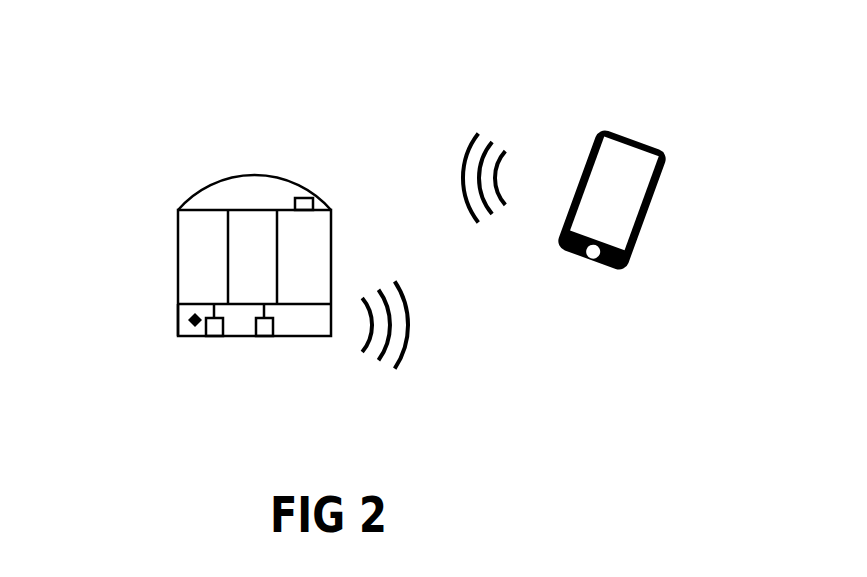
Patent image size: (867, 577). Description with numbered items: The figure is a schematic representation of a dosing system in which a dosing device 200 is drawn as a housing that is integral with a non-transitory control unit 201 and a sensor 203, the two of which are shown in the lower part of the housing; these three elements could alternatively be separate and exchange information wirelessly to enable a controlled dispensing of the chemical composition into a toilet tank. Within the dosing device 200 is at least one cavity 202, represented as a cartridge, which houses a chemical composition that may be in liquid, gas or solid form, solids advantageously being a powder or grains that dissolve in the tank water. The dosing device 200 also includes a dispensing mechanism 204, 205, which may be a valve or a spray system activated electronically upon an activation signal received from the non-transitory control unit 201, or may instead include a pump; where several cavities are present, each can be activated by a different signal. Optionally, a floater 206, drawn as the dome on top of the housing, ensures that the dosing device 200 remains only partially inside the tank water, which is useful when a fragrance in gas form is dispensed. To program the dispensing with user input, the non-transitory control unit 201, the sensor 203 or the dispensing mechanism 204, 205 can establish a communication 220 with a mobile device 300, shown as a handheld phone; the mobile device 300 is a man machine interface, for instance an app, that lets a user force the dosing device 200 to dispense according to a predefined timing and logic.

The dosing device 200 is at (214, 155).
The non-transitory control unit 201 is at (164, 326).
The cavity 202 is at (203, 263).
The sensor 203 is at (200, 329).
The dispensing mechanism 204 is at (263, 327).
The dispensing mechanism 205 is at (312, 200).
The floater 206 is at (197, 200).
The communication 220 is at (417, 337).
The mobile device 300 is at (646, 105).